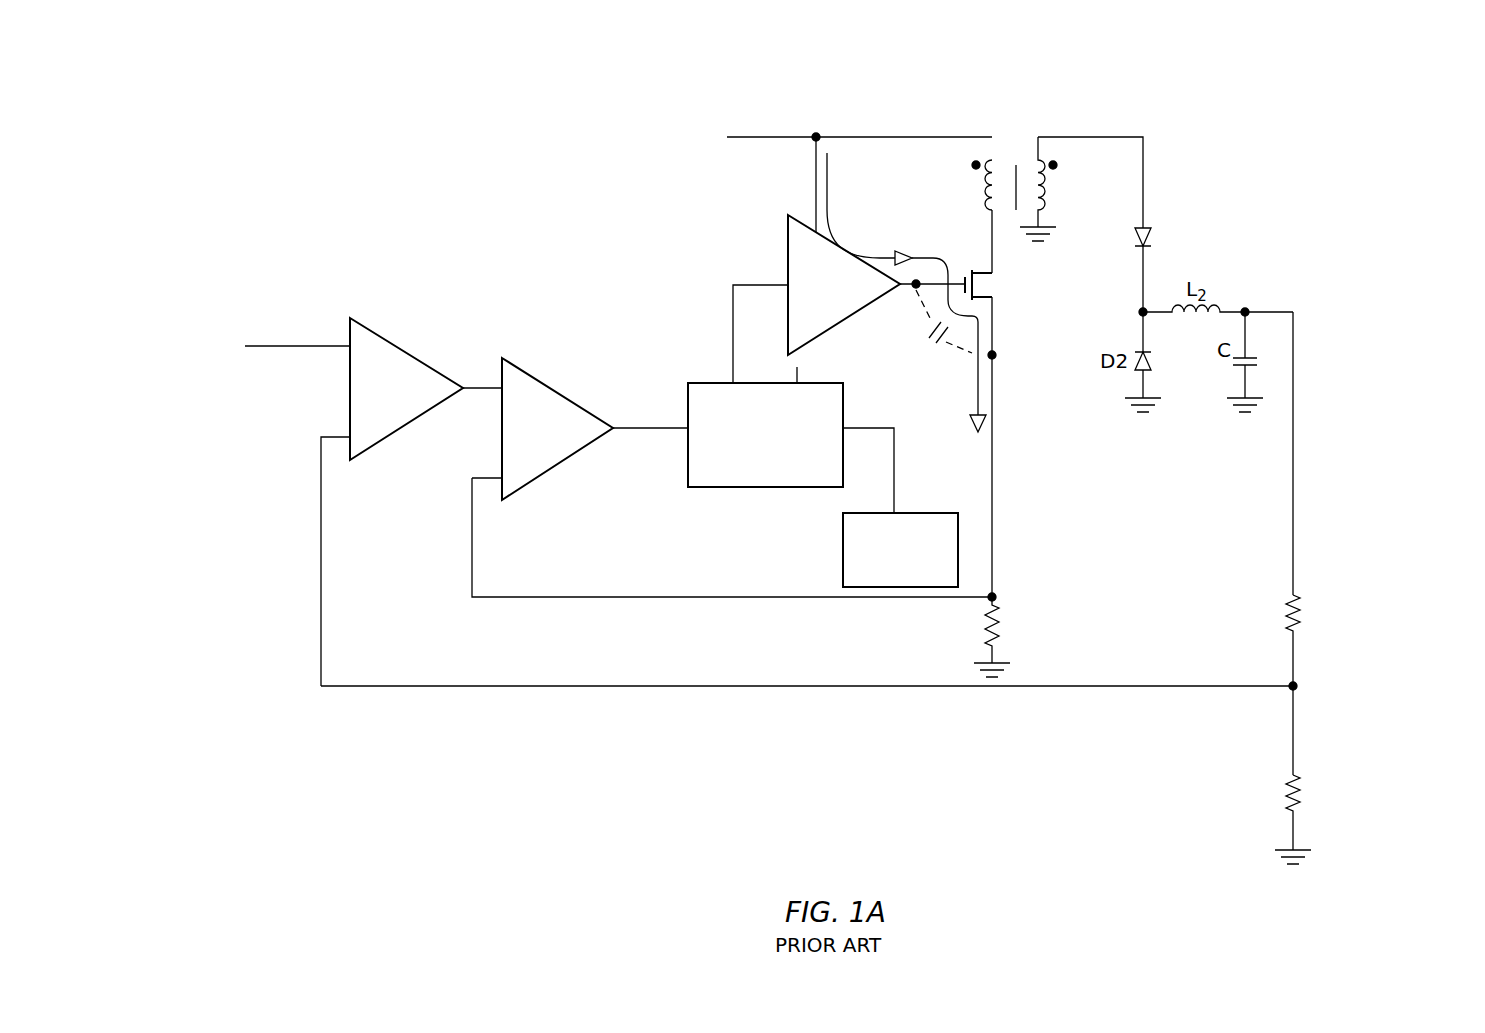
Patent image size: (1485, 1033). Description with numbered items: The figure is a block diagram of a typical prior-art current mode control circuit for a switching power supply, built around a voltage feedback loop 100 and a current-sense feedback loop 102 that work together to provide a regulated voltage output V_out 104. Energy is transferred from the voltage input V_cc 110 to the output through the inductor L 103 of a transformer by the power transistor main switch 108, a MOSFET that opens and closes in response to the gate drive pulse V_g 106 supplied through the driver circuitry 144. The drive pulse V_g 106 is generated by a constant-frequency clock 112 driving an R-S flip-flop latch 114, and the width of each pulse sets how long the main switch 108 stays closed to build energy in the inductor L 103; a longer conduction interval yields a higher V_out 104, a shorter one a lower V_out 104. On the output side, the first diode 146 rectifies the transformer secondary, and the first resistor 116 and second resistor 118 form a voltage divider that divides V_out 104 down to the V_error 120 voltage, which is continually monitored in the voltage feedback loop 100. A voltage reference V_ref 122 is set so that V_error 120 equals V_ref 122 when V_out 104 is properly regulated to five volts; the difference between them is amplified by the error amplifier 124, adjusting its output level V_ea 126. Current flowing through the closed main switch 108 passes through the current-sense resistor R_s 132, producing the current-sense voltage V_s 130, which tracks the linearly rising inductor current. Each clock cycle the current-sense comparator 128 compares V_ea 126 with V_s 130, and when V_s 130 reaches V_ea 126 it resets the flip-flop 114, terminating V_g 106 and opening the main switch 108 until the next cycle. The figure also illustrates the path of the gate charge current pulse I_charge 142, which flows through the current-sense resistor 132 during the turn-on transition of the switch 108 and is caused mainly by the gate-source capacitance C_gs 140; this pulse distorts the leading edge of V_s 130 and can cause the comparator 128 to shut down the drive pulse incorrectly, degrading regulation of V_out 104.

The voltage feedback loop 100 is at (395, 688).
The current-sense feedback loop 102 is at (515, 598).
The inductor L 103 is at (962, 164).
The voltage output V_out 104 is at (1296, 272).
The gate drive voltage pulse V_g 106 is at (905, 236).
The power transistor main switch 108 is at (995, 285).
The voltage input V_cc 110 is at (702, 123).
The constant-frequency clock 112 is at (843, 544).
The R-S flip-flop latch 114 is at (722, 488).
The resistor R1 116 is at (1332, 620).
The resistor R2 118 is at (1335, 800).
The V_error voltage 120 is at (1390, 690).
The voltage reference V_ref 122 is at (206, 365).
The error amplifier 124 is at (387, 338).
The error amplifier output voltage V_ea 126 is at (470, 357).
The current-sense comparator 128 is at (547, 386).
The current-sense voltage V_s 130 is at (1025, 564).
The current-sense resistor R_s 132 is at (1045, 640).
The gate-source capacitance C_gs 140 is at (951, 384).
The gate charge current pulse I_charge 142 is at (888, 168).
The driver circuitry 144 is at (788, 240).
The diode D1 146 is at (1172, 224).